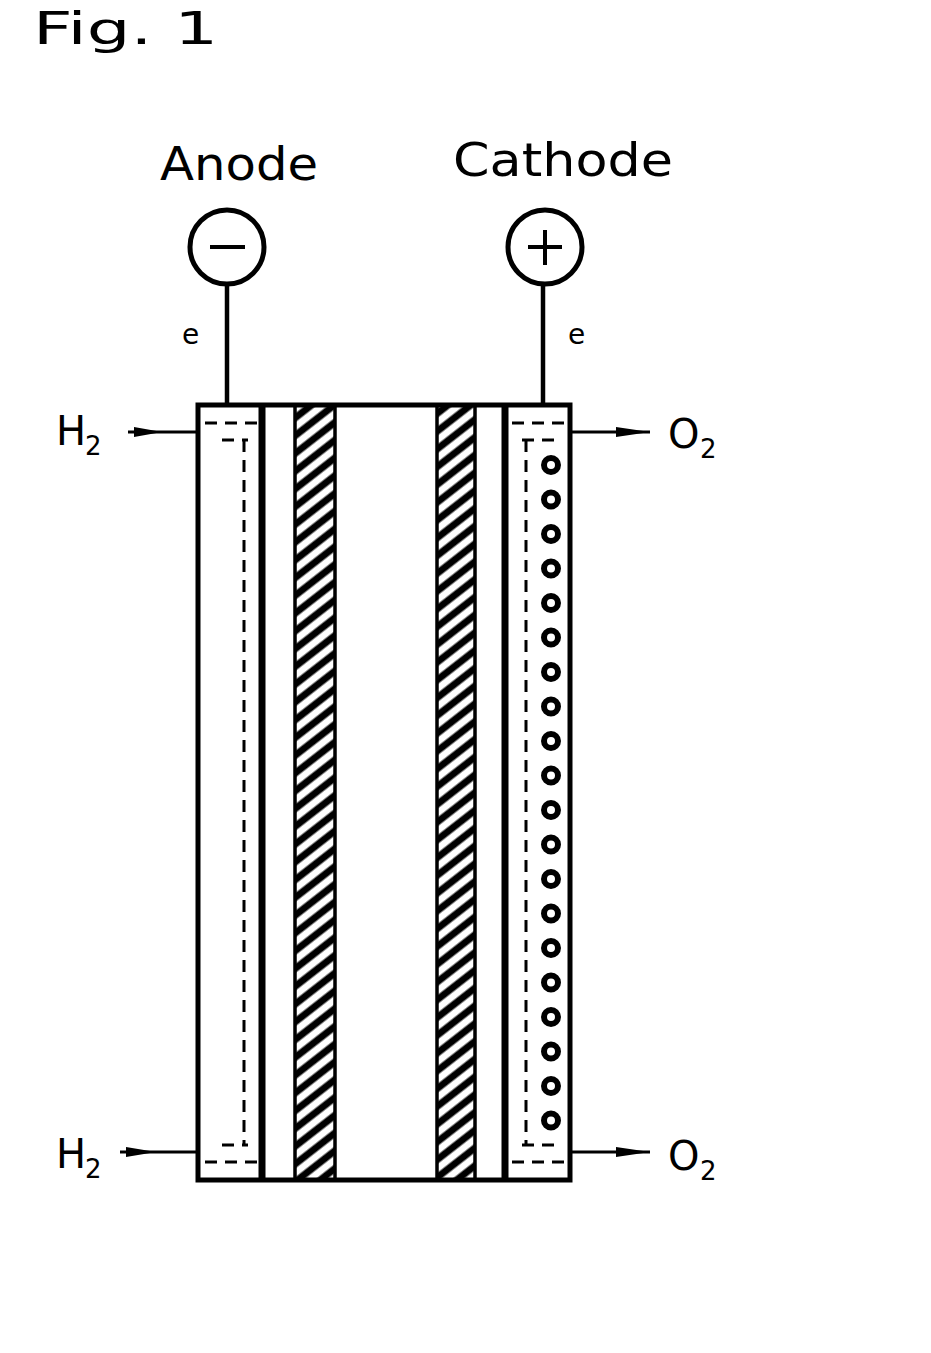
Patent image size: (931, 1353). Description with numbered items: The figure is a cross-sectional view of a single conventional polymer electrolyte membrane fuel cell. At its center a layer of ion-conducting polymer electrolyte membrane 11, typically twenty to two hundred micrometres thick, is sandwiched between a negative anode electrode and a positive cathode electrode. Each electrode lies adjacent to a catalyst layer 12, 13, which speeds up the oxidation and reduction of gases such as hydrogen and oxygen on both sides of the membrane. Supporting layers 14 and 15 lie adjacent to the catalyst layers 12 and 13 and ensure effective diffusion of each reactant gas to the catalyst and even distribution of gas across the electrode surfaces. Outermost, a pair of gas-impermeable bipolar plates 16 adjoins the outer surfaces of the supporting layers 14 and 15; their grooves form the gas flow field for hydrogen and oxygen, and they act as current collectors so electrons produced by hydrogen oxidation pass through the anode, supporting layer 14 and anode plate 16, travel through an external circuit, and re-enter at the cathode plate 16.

The polymer electrolyte membrane 11 is at (383, 1150).
The catalyst layer 12 is at (313, 1178).
The catalyst layer 13 is at (455, 1176).
The supporting layer 14 is at (280, 655).
The supporting layer 15 is at (490, 655).
The bipolar plate 16 is at (215, 792).